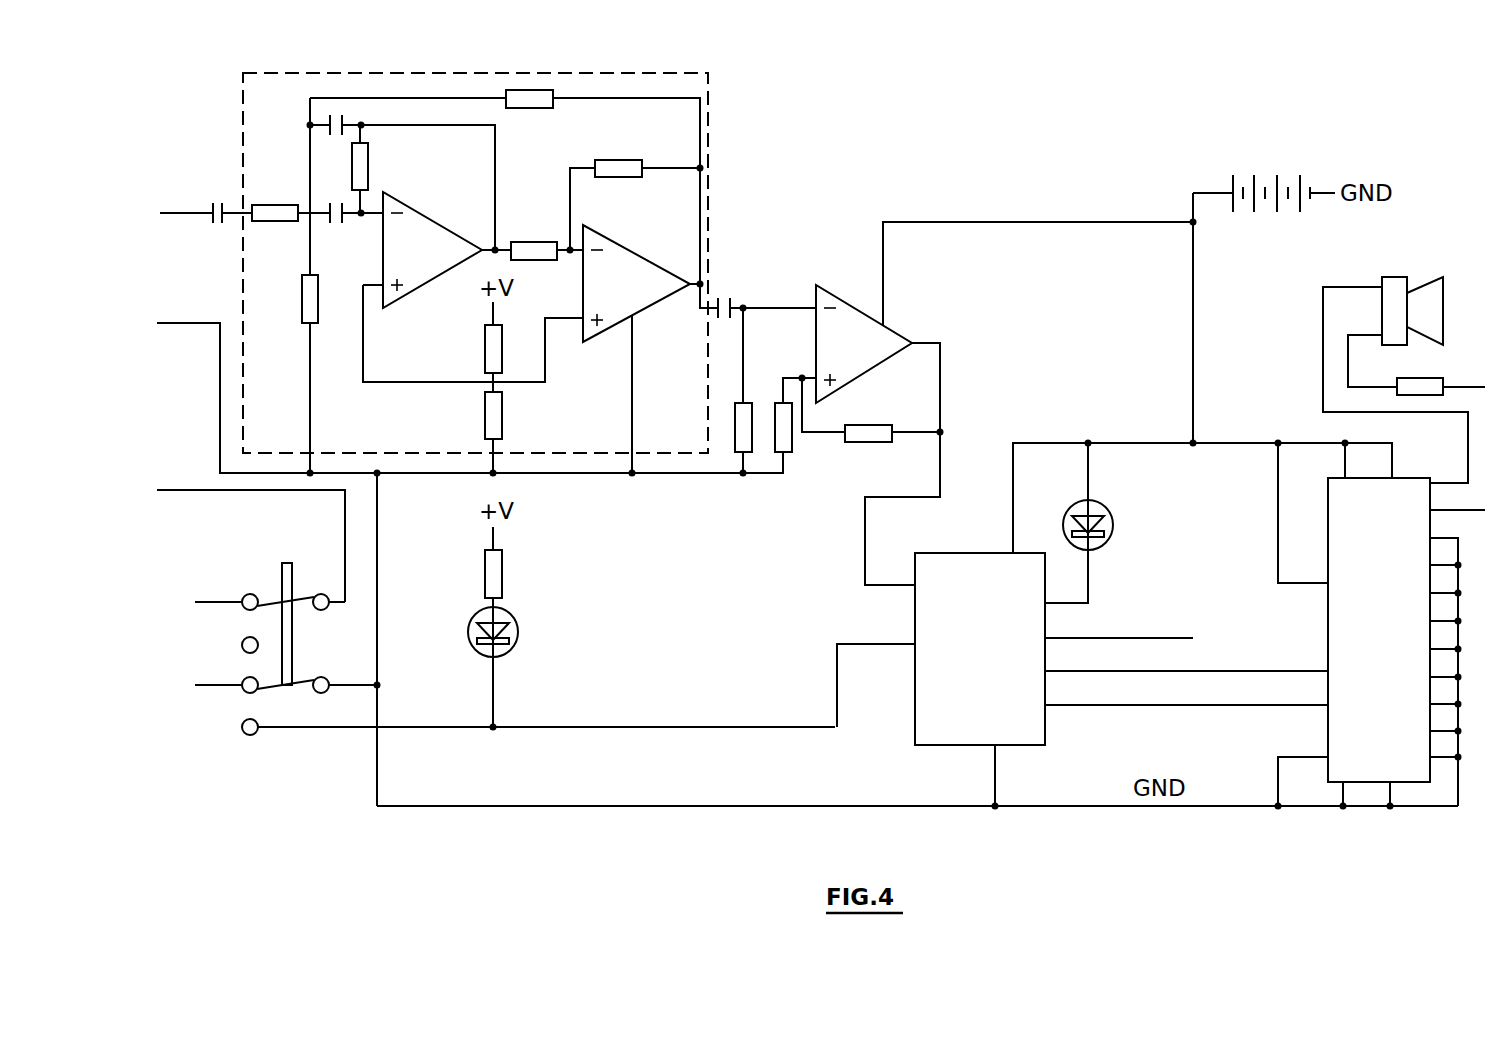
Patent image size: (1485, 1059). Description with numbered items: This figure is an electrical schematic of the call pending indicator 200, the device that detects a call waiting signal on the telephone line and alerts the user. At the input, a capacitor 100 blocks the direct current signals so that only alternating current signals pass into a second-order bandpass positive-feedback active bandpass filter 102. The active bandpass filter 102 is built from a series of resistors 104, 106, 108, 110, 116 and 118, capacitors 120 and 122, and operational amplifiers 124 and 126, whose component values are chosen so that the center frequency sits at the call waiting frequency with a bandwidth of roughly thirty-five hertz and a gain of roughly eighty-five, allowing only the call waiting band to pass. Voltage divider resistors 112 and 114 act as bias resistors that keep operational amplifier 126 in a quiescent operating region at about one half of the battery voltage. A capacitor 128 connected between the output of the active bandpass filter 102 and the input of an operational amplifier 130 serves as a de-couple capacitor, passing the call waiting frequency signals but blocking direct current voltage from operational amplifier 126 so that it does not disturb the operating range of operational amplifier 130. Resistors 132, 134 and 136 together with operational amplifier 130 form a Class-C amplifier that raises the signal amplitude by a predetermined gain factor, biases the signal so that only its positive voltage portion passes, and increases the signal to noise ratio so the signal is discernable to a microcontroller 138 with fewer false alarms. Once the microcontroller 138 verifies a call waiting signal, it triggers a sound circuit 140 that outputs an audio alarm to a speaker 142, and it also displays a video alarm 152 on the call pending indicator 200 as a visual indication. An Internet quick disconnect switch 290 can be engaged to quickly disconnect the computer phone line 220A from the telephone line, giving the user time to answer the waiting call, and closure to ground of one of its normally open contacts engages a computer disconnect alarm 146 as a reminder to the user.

The capacitor 100 is at (211, 205).
The active bandpass filter 102 is at (243, 108).
The resistor 104 is at (281, 205).
The resistor 106 is at (302, 281).
The resistor 108 is at (368, 162).
The resistor 110 is at (526, 108).
The voltage divider resistor 112 is at (503, 355).
The voltage divider resistor 114 is at (503, 421).
The resistor 116 is at (520, 242).
The resistor 118 is at (620, 160).
The capacitor 120 is at (331, 226).
The capacitor 122 is at (330, 122).
The operational amplifier 124 is at (430, 219).
The operational amplifier 126 is at (628, 251).
The capacitor 128 is at (733, 298).
The operational amplifier 130 is at (900, 331).
The resistor 132 is at (736, 447).
The resistor 134 is at (792, 445).
The resistor 136 is at (870, 425).
The microcontroller 138 is at (946, 553).
The sound circuit 140 is at (1328, 634).
The speaker 142 is at (1444, 296).
The computer disconnect alarm 146 is at (518, 628).
The video alarm 152 is at (1113, 500).
The call pending indicator 200 is at (810, 818).
The computer phone line 220A is at (212, 685).
The Internet quick disconnect switch 290 is at (250, 735).